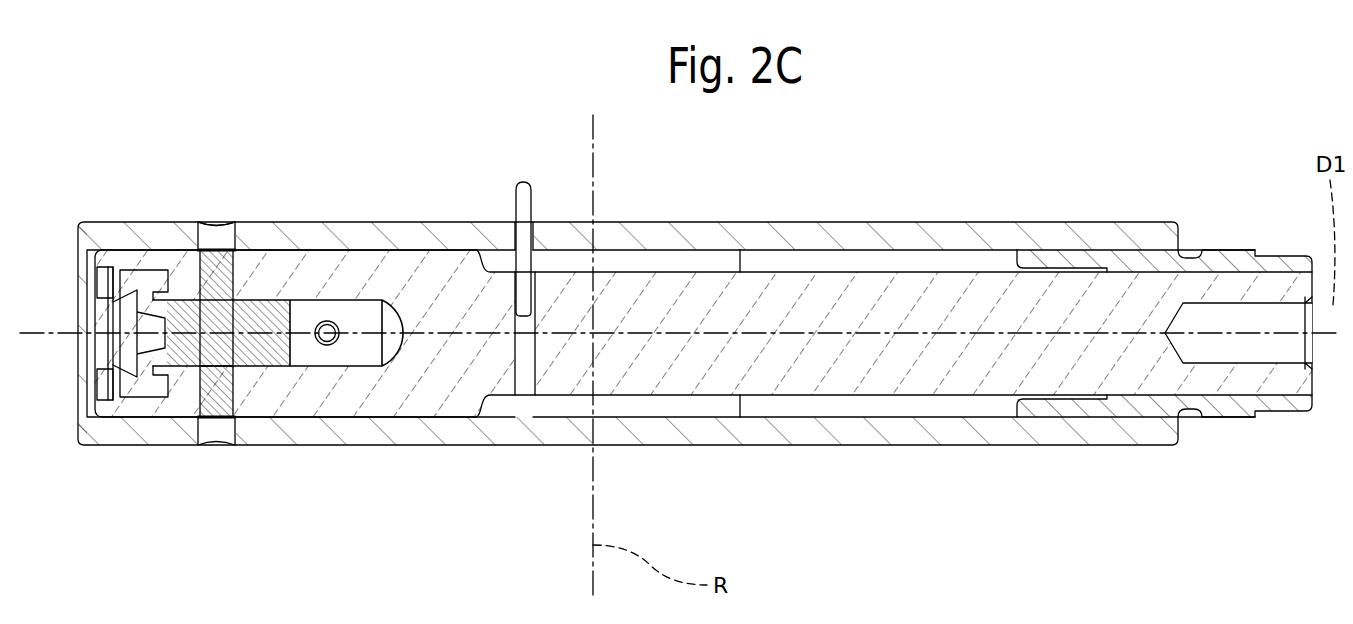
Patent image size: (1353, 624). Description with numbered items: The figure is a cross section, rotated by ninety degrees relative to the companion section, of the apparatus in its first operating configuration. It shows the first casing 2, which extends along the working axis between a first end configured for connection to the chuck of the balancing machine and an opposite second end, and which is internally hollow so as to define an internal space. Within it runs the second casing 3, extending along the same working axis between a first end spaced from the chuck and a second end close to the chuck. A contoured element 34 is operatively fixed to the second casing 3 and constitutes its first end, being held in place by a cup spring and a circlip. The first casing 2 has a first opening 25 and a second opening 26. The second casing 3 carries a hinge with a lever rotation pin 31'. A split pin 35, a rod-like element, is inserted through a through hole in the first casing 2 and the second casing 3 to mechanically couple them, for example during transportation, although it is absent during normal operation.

The first casing 2 is at (418, 283).
The second casing 3 is at (460, 245).
The first opening 25 is at (228, 443).
The second opening 26 is at (219, 232).
The lever rotation pin 31' is at (178, 447).
The contoured element 34 is at (133, 280).
The split pin 35 is at (527, 204).